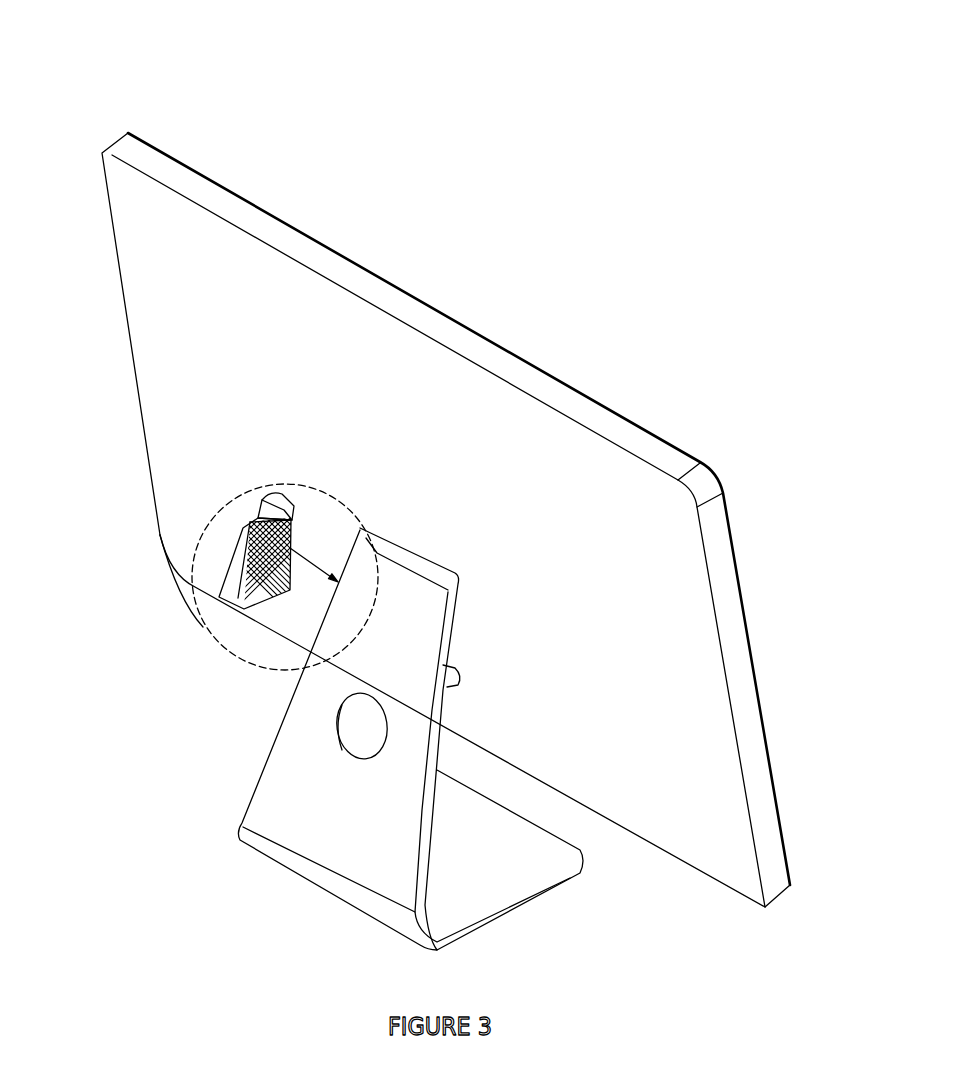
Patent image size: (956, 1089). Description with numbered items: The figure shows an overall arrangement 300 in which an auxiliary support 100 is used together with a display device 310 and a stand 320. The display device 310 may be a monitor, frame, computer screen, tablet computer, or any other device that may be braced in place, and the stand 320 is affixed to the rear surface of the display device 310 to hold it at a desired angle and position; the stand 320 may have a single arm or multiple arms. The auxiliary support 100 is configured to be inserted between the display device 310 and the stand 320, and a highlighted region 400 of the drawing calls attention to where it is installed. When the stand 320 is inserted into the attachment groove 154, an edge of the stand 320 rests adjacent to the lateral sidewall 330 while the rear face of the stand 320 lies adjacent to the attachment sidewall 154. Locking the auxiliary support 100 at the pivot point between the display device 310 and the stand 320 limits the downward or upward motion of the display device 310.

The display system 300 is at (122, 86).
The display device 310 is at (192, 182).
The stand 320 is at (253, 788).
The lateral sidewall 330 is at (255, 517).
The detail region 400 is at (203, 627).
The auxiliary support 100 is at (238, 447).
The attachment groove 154 is at (280, 520).